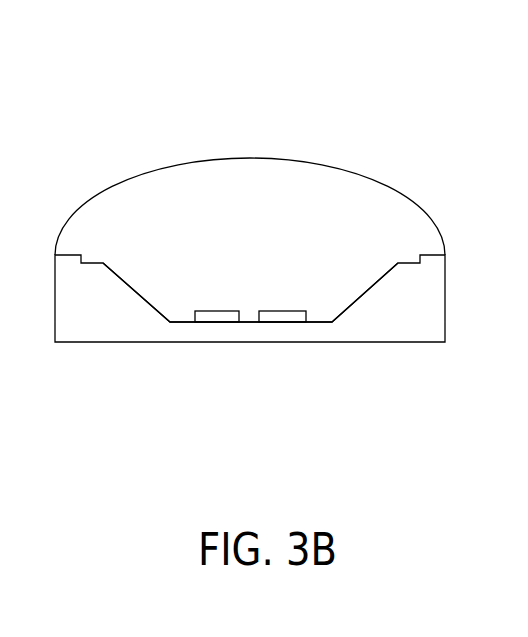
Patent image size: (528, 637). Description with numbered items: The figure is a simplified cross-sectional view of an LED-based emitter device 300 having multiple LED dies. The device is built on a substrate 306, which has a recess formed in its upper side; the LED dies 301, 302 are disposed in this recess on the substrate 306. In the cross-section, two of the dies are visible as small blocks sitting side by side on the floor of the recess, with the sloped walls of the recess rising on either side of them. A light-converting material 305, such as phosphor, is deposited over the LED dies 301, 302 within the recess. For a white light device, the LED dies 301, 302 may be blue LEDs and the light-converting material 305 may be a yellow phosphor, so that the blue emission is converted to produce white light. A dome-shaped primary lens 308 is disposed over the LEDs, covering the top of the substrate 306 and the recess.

The LED-based emitter device 300 is at (300, 88).
The LED die 301 is at (220, 318).
The LED die 302 is at (280, 316).
The light-converting material 305 is at (208, 300).
The substrate 306 is at (410, 327).
The primary lens 308 is at (274, 226).